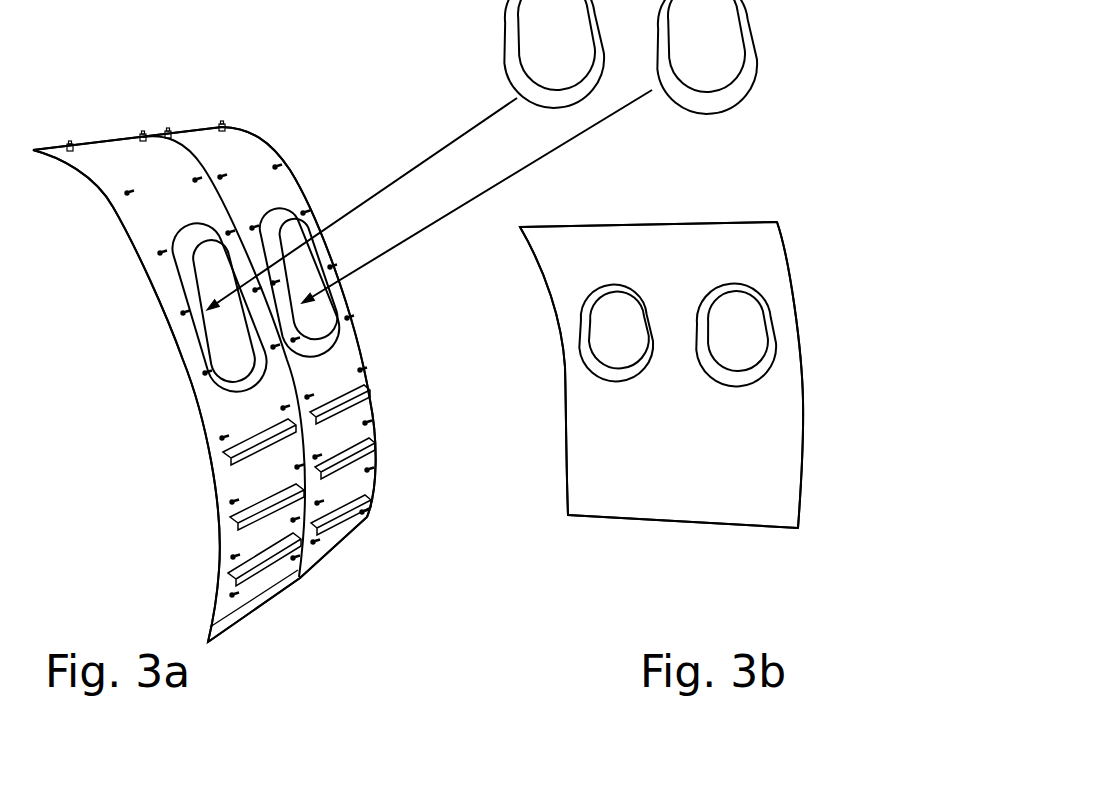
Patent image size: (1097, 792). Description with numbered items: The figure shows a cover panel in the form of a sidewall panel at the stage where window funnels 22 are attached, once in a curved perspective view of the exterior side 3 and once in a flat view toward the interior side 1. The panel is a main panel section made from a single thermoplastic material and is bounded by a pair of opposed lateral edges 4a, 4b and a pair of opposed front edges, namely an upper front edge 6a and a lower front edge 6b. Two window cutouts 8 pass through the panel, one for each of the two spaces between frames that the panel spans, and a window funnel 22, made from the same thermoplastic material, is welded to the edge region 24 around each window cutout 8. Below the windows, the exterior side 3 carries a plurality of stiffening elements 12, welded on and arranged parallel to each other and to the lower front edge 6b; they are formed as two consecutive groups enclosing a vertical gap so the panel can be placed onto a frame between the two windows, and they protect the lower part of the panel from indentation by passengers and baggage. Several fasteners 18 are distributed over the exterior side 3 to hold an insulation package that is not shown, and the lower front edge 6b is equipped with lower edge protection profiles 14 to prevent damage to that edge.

In FIG. 3A, the interior side 1 is at (193, 483).
In FIG. 3B, the interior side 1 is at (707, 467).
In FIG. 3A, the exterior side 3 is at (232, 148).
In FIG. 3A, the lateral edge 4a is at (357, 327).
In FIG. 3B, the lateral edge 4a is at (562, 357).
In FIG. 3A, the lateral edge 4b is at (172, 330).
In FIG. 3B, the lateral edge 4b is at (803, 417).
In FIG. 3A, the upper front edge 6a is at (150, 133).
In FIG. 3B, the upper front edge 6a is at (657, 214).
In FIG. 3A, the lower front edge 6b is at (300, 587).
In FIG. 3B, the lower front edge 6b is at (680, 532).
In FIG. 3A, the window cutout 8 is at (305, 238).
In FIG. 3B, the window cutout 8 is at (753, 320).
In FIG. 3A, the stiffening element 12 is at (372, 487).
In FIG. 3A, the lower edge protection profile 14 is at (283, 0).
In FIG. 3A, the fastener 18 is at (124, 195).
In FIG. 3A, the window funnel 22 is at (241, 383).
In FIG. 3B, the window funnel 22 is at (753, 370).
In FIG. 3A, the edge region 24 is at (212, 222).